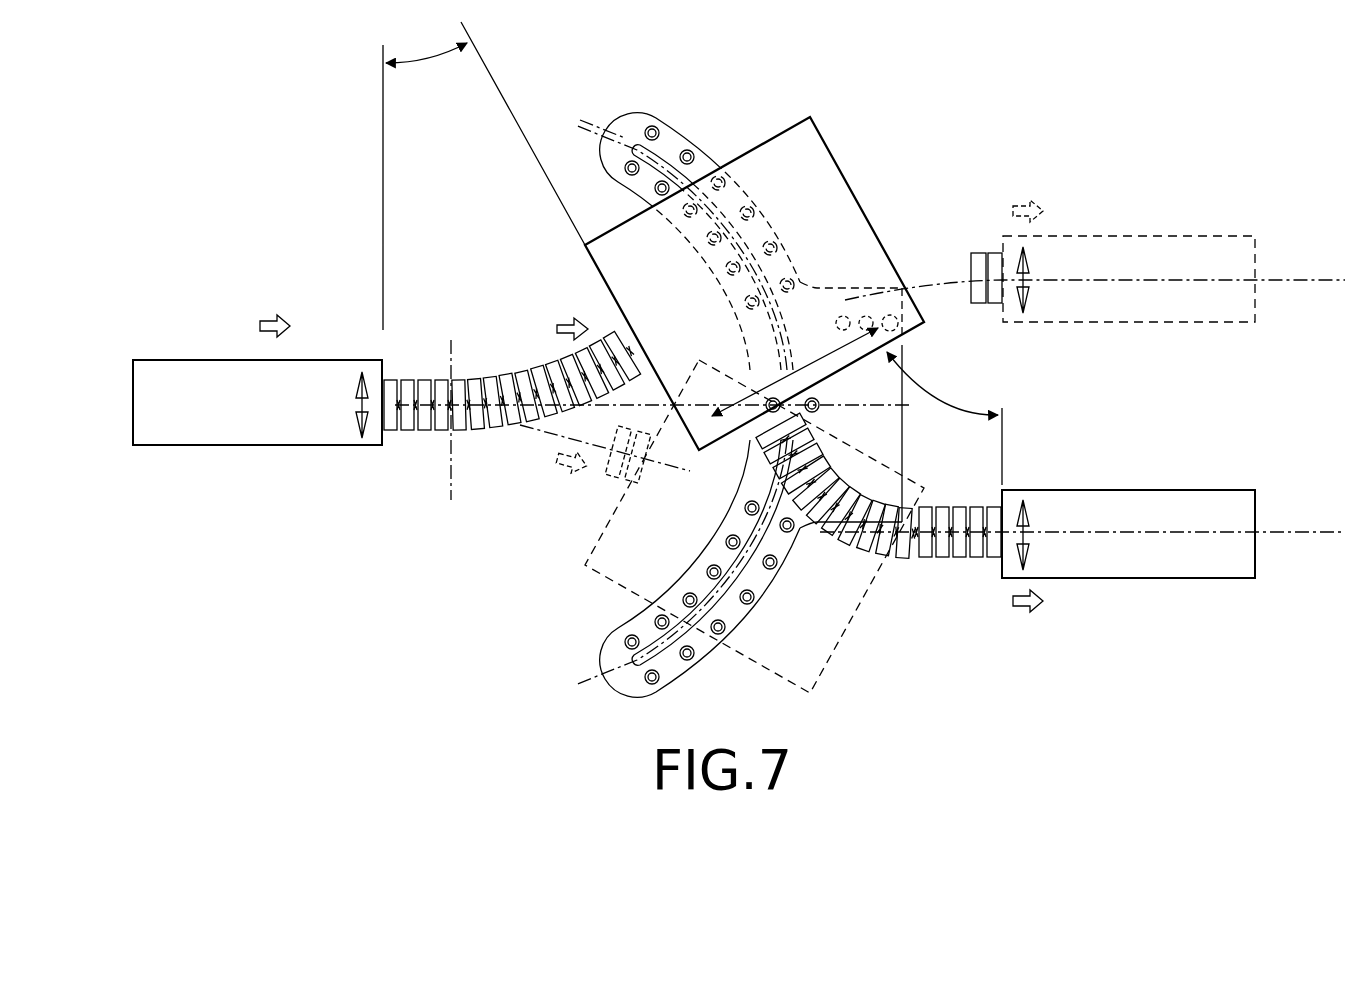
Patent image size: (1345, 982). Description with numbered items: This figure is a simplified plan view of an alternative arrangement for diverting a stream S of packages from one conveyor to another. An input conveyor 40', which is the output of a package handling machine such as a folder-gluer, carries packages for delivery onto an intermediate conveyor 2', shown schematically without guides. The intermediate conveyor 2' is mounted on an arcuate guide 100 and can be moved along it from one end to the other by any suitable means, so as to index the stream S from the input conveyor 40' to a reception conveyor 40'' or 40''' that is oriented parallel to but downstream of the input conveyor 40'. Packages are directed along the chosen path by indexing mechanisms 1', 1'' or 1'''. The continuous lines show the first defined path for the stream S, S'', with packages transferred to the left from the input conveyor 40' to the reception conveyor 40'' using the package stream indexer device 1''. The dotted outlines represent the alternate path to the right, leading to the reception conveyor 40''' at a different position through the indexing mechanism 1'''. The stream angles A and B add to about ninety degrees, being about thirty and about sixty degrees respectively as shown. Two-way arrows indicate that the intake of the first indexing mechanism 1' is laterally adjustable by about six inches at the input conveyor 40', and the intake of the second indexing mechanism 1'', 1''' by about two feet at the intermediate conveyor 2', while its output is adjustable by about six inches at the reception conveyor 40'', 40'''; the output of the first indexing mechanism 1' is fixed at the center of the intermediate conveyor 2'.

The input conveyor 40' is at (257, 380).
The reception conveyor 40'' is at (1128, 563).
The reception conveyor 40''' is at (1129, 244).
The first indexing mechanism 1' is at (514, 435).
The second indexing mechanism 1'' is at (905, 554).
The second indexing mechanism 1''' is at (797, 368).
The intermediate conveyor 2' is at (754, 414).
The arcuate guide 100 is at (606, 655).
The stream angle A is at (440, 60).
The stream angle B is at (932, 398).
The stream of packages S is at (676, 253).
The stream of packages S'' is at (932, 628).